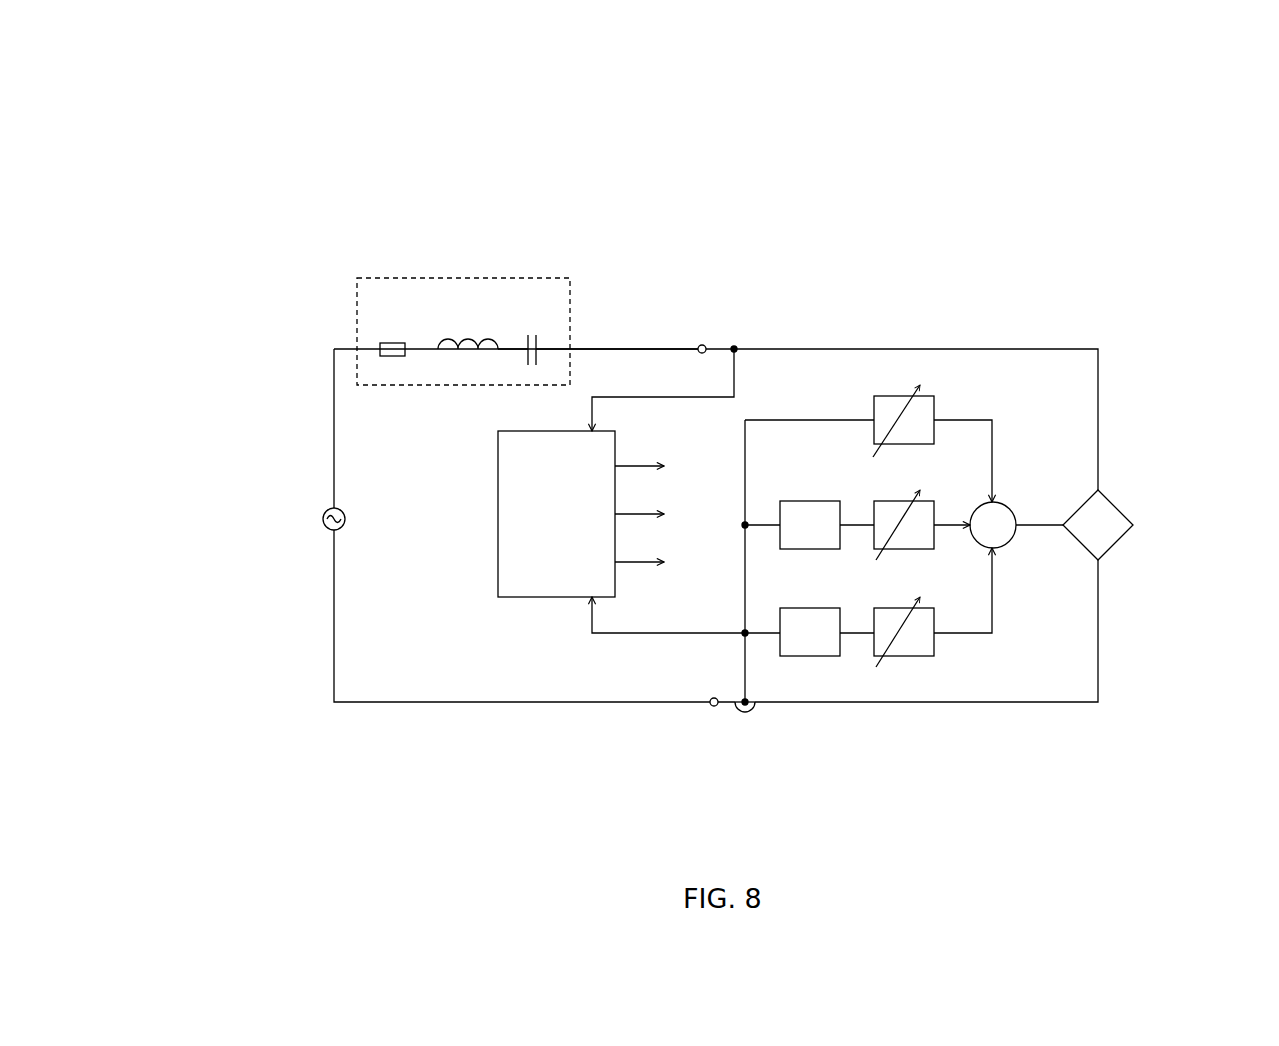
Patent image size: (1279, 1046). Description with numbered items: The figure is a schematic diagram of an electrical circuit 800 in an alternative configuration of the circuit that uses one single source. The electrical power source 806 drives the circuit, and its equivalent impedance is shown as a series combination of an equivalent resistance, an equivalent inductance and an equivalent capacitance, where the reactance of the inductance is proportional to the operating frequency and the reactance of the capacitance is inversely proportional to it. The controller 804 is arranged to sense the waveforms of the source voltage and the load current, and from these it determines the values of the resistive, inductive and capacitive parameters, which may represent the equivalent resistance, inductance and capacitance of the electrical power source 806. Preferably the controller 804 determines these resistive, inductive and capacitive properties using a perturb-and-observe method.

The impedance measurement system 800 is at (1163, 175).
The controller 804 is at (595, 514).
The electrical power source 806 is at (312, 500).